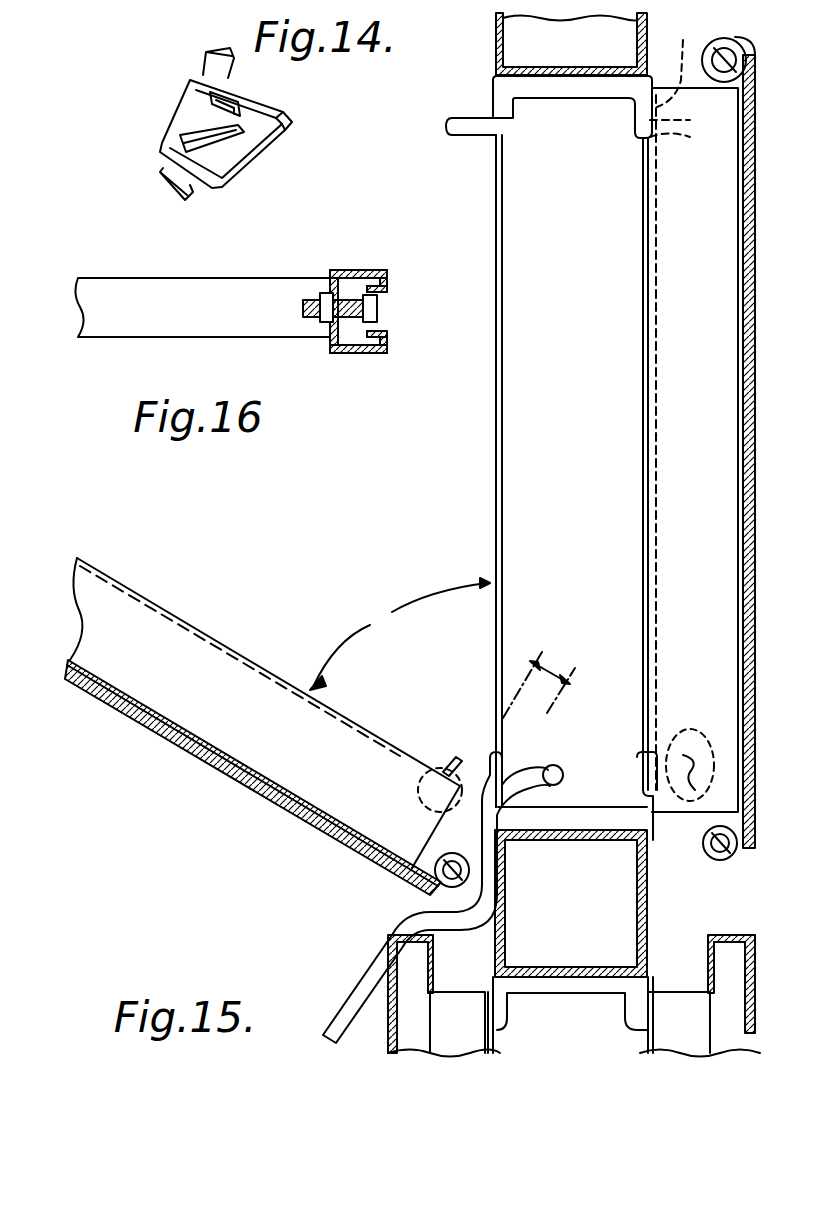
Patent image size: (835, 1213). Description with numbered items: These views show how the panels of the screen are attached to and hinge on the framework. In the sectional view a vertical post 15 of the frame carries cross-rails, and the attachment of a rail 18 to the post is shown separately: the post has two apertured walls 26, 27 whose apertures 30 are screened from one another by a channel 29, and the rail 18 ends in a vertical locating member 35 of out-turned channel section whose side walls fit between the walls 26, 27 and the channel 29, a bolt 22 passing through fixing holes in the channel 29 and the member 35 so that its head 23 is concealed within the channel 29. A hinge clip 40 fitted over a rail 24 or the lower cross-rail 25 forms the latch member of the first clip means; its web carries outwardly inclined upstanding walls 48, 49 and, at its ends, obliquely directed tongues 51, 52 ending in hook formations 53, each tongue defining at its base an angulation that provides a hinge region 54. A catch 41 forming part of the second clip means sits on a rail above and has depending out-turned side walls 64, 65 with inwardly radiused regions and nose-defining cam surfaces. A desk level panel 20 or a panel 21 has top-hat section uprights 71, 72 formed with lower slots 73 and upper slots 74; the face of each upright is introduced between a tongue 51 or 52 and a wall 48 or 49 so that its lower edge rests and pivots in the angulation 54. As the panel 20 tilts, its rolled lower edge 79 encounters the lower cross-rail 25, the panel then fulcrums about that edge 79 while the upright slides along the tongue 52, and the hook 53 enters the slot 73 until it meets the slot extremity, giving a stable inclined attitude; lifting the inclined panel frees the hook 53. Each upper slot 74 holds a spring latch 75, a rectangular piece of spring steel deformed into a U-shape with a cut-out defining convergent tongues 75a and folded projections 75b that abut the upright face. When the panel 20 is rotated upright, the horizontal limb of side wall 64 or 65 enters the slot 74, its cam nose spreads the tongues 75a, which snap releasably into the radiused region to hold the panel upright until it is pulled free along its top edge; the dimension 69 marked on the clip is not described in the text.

In FIG. 15, the post 15 is at (495, 518).
In FIG. 16, the rail 18 is at (193, 323).
In FIG. 15, the desk level panel 20 is at (740, 596).
In FIG. 15, the panel 21 is at (393, 995).
In FIG. 16, the bolt 22 is at (328, 320).
In FIG. 16, the bolt head 23 is at (378, 310).
In FIG. 15, the rail 24 is at (495, 45).
In FIG. 15, the lower cross-rail 25 is at (644, 902).
In FIG. 16, the wall 26 is at (337, 350).
In FIG. 16, the wall 27 is at (340, 268).
In FIG. 16, the channel 29 is at (385, 302).
In FIG. 16, the aperture 30 is at (365, 357).
In FIG. 16, the vertical locating member 35 is at (362, 272).
In FIG. 15, the hinge clip 40 is at (575, 816).
In FIG. 15, the catch 41 is at (578, 93).
In FIG. 15, the upstanding wall 48 is at (638, 762).
In FIG. 15, the upstanding wall 49 is at (515, 768).
In FIG. 15, the tongue 51 is at (685, 758).
In FIG. 15, the tongue 52 is at (480, 767).
In FIG. 15, the hook formation 53 is at (438, 780).
In FIG. 15, the hinge region 54 is at (655, 825).
In FIG. 15, the side wall 64 is at (640, 130).
In FIG. 15, the side wall 65 is at (503, 140).
In FIG. 15, the offset distance 69 is at (557, 663).
In FIG. 15, the upright 71 is at (660, 520).
In FIG. 15, the upright 72 is at (272, 693).
In FIG. 15, the lower slot 73 is at (413, 768).
In FIG. 15, the upper slot 74 is at (674, 73).
In FIG. 14, the spring latch 75 is at (290, 112).
In FIG. 14, the tongue 75a is at (200, 143).
In FIG. 14, the folded projection 75b is at (207, 56).
In FIG. 15, the rolled lower edge 79 is at (445, 888).